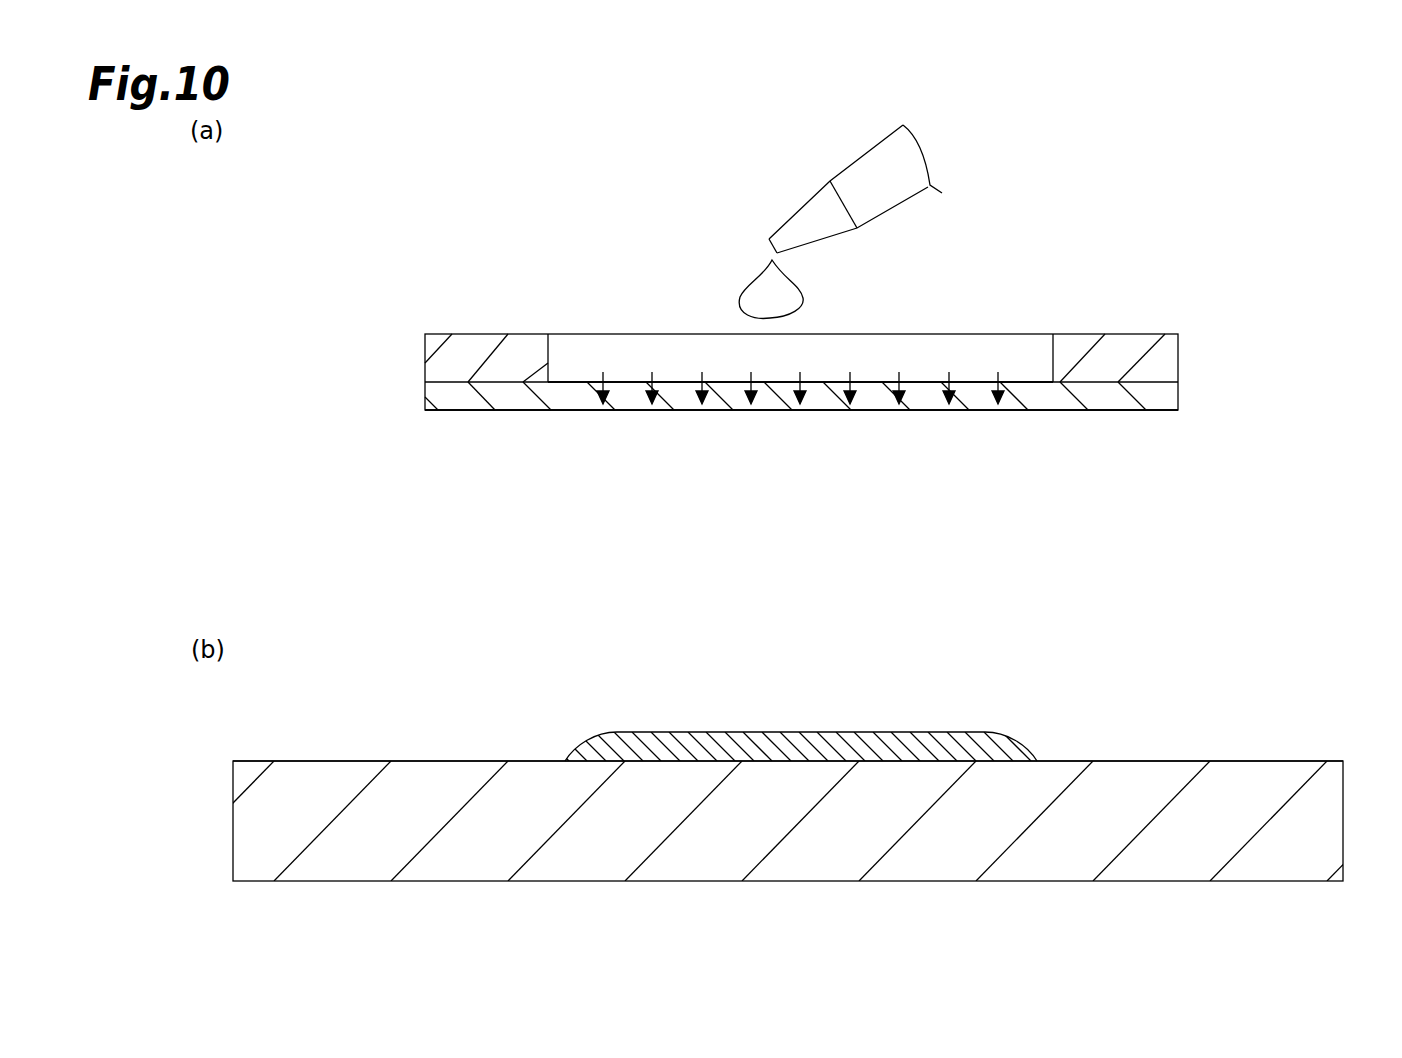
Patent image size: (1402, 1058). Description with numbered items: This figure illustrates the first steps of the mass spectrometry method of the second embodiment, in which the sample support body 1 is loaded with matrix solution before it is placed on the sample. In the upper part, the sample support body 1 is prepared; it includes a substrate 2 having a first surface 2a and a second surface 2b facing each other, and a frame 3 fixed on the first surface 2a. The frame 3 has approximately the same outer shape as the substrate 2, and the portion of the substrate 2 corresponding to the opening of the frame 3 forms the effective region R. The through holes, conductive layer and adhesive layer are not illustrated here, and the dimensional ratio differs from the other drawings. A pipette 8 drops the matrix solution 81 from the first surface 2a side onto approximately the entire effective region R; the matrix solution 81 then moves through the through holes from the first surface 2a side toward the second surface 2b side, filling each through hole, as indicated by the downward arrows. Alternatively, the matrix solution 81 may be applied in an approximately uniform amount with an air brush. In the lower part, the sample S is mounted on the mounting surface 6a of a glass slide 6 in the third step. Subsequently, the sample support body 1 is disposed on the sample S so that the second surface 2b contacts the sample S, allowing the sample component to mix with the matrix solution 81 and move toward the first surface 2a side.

The sample support body 1 is at (1186, 327).
The substrate 2 is at (1167, 396).
The first surface 2a is at (567, 380).
The second surface 2b is at (563, 411).
The frame 3 is at (1167, 354).
The effective region R is at (1013, 372).
The pipette 8 is at (875, 160).
The matrix solution 81 is at (757, 287).
The sample S is at (956, 735).
The glass slide 6 is at (1330, 833).
The mounting surface 6a is at (1255, 760).